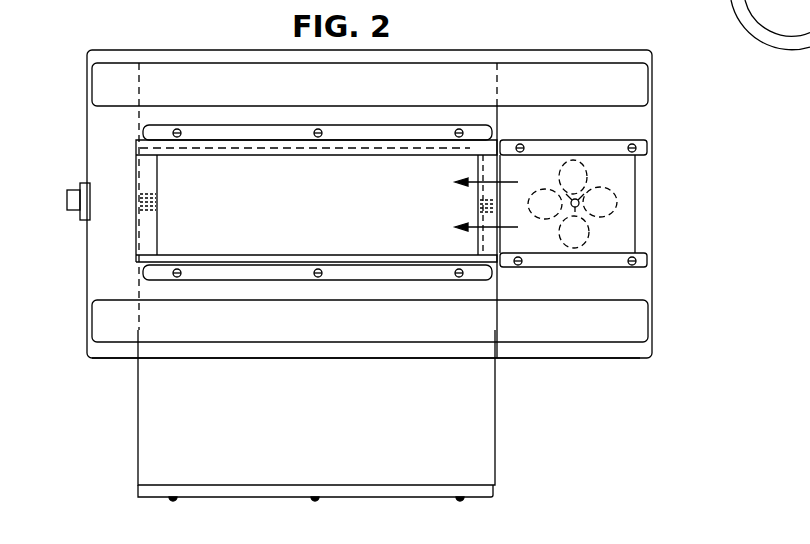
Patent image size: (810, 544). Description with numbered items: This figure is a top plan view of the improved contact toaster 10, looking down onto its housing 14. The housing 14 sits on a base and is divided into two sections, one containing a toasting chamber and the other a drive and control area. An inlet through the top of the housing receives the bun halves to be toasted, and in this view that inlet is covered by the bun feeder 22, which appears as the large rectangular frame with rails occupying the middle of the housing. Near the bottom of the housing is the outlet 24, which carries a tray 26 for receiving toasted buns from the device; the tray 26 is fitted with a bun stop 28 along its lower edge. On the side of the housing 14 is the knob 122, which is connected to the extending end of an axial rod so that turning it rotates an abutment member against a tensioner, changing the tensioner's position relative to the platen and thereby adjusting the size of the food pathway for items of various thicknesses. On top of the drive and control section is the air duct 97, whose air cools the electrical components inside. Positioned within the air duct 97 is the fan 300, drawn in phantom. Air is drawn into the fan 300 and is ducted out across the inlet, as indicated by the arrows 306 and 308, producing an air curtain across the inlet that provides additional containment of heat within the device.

The contact toaster 10 is at (708, 167).
The housing 14 is at (650, 282).
The bun feeder 22 is at (470, 147).
The outlet 24 is at (163, 358).
The tray 26 is at (497, 410).
The bun stop 28 is at (477, 500).
The air duct 97 is at (588, 158).
The knob 122 is at (67, 202).
The fan 300 is at (606, 215).
The arrow 306 is at (505, 182).
The arrow 308 is at (519, 228).